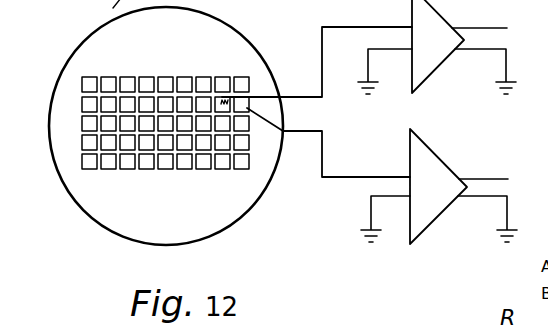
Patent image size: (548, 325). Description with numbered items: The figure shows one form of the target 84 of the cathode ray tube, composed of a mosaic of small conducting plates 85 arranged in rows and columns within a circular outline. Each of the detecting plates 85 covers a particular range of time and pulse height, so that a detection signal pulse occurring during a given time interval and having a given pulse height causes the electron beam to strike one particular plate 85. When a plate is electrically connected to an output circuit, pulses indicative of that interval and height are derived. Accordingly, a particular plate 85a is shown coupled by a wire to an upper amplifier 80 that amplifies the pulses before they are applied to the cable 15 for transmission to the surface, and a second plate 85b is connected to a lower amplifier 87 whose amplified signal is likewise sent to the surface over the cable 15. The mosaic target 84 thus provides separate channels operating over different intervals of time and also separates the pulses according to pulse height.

The cable 15 is at (494, 28).
The amplifier 80 is at (435, 15).
The target 84 is at (73, 145).
The conducting plates 85 is at (104, 160).
The particular plate 85a is at (227, 97).
The plate 85b is at (246, 105).
The amplifier 87 is at (432, 223).